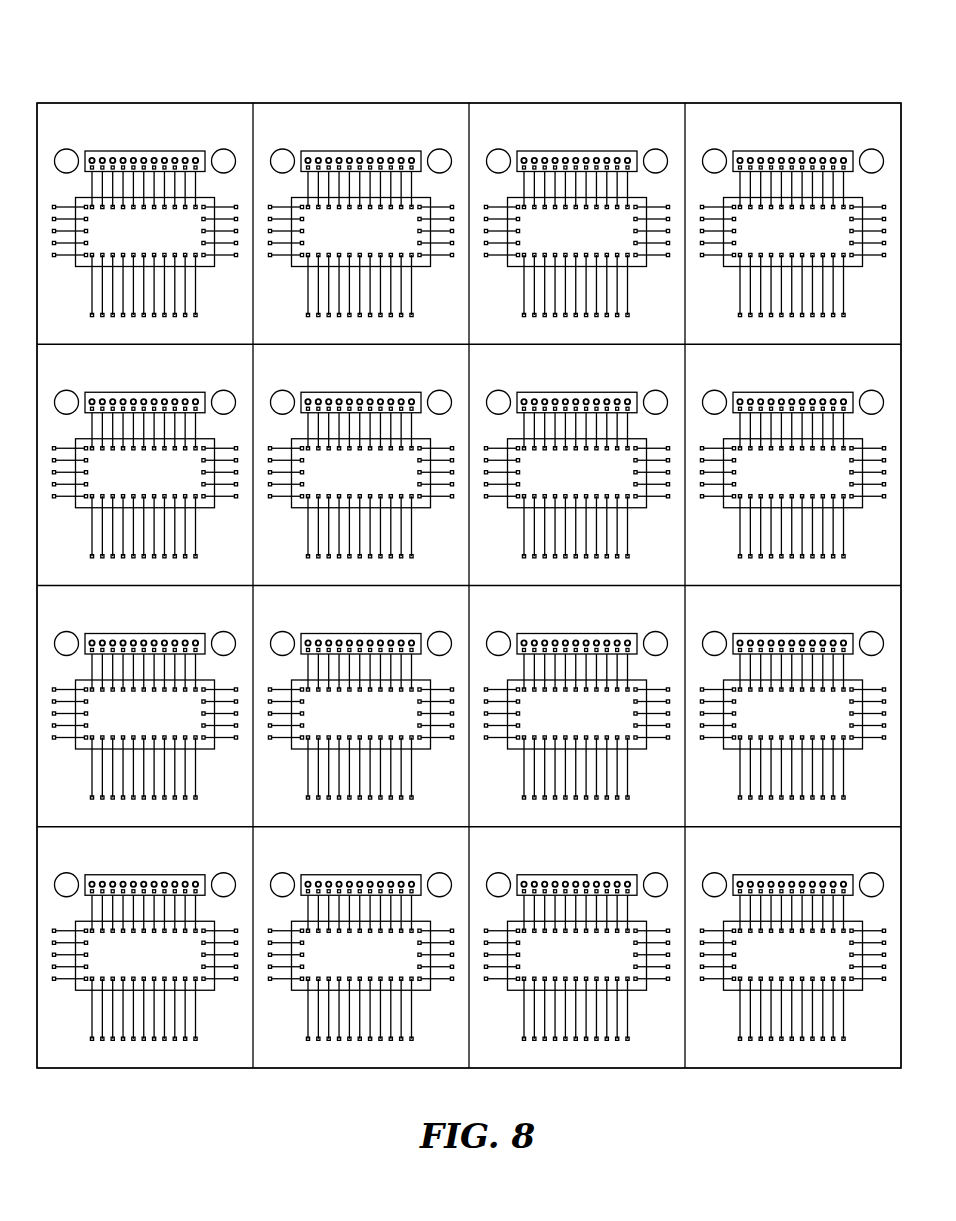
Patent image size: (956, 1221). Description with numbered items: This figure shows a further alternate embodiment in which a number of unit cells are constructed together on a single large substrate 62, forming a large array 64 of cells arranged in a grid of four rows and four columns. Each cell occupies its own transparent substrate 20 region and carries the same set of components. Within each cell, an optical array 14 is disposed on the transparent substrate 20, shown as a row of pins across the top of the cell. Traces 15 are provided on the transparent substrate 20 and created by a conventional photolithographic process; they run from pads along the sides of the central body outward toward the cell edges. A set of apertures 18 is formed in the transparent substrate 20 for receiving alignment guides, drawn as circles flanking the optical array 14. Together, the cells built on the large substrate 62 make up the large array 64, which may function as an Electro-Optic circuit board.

The large array 64 is at (477, 38).
The large substrate 62 is at (58, 107).
The transparent substrate 20 is at (177, 107).
The optical array 14 is at (337, 152).
The aperture 18 is at (500, 153).
The trace 15 is at (713, 207).